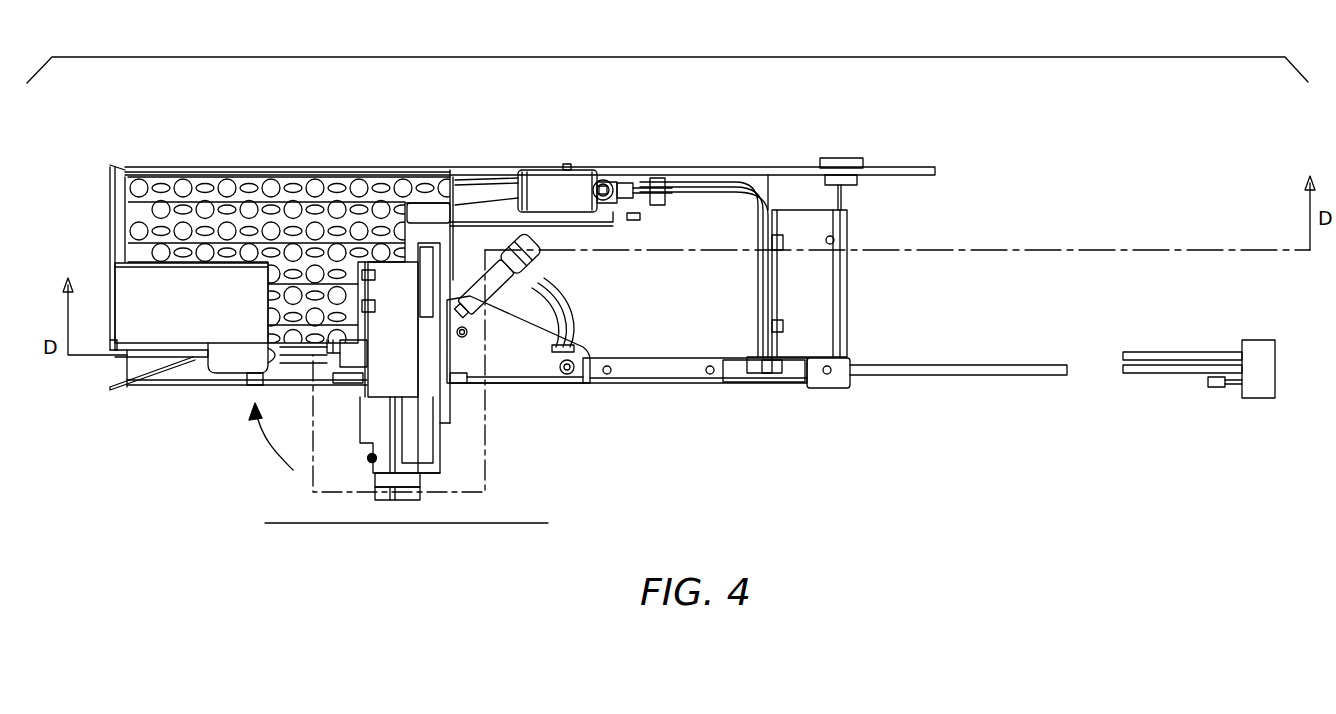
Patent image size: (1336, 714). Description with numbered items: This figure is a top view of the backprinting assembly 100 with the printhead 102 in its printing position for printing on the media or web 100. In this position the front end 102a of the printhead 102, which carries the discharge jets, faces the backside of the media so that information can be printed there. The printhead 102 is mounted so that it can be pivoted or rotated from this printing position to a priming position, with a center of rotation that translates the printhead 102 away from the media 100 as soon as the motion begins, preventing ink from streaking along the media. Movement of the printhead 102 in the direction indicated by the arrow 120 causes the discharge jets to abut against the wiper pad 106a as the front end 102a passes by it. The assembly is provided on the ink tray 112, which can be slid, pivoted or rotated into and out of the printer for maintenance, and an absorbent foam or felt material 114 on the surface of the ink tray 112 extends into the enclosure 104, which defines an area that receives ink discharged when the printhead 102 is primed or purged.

The backprinting assembly 100 is at (997, 176).
The printhead 102 is at (383, 180).
The front end 102a is at (420, 496).
The enclosure 104 is at (137, 290).
The wiper pad 106a is at (267, 357).
The ink tray 112 is at (287, 174).
The absorbent foam or felt material 114 is at (193, 182).
The arrow 120 is at (293, 470).